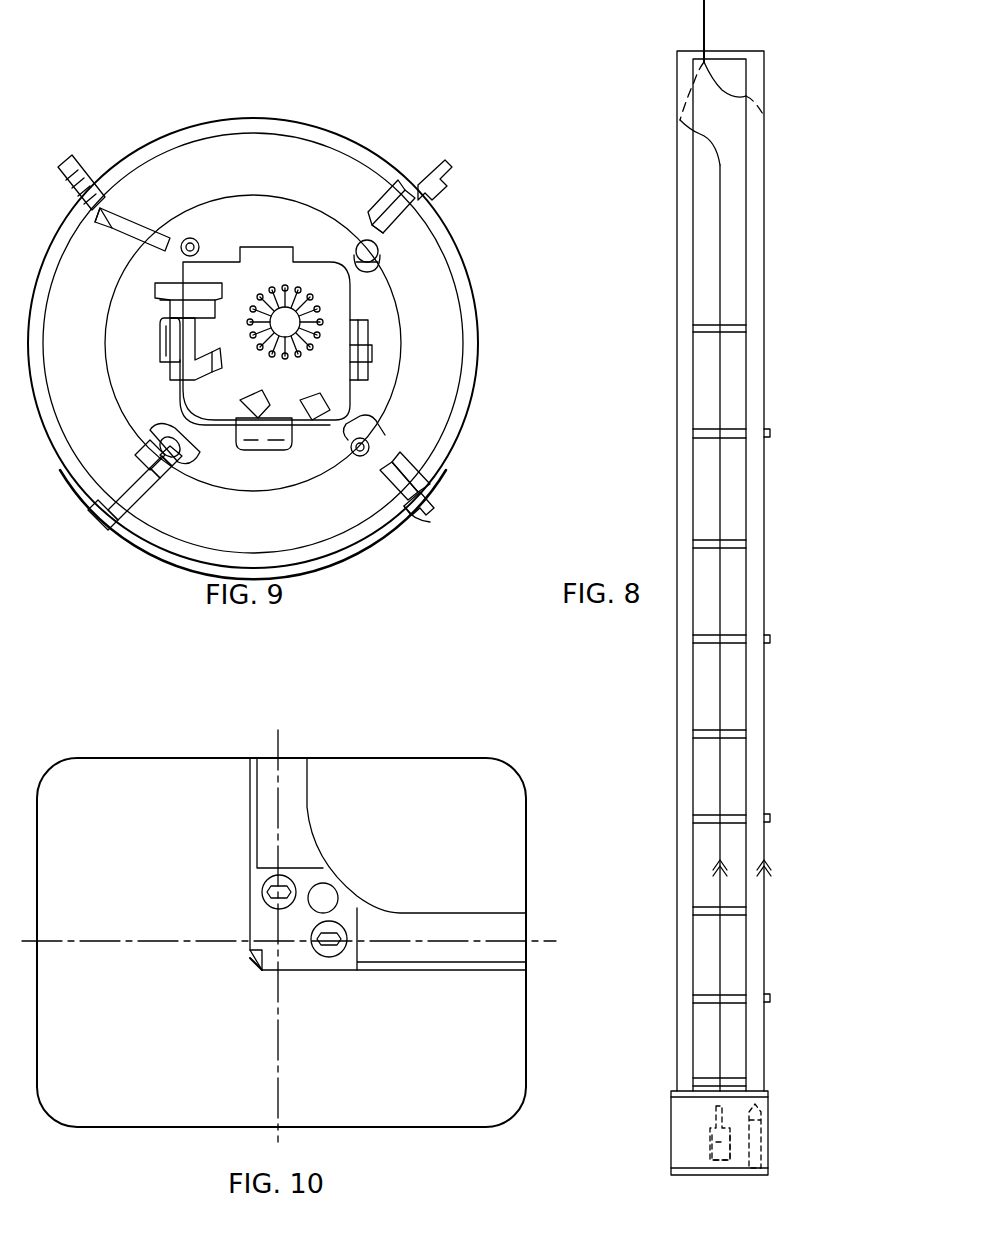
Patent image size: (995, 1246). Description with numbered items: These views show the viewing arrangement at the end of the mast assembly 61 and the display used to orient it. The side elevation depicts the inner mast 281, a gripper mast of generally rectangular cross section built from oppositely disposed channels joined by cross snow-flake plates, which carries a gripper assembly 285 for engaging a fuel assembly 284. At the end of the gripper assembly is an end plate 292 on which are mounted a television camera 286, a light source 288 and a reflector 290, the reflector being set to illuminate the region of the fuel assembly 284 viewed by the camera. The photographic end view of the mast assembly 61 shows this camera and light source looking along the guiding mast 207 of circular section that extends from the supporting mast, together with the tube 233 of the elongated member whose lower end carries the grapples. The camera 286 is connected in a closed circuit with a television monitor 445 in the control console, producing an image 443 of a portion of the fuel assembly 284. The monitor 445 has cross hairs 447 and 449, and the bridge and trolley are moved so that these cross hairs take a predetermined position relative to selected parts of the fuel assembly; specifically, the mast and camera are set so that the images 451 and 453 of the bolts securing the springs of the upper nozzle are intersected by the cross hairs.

In FIG. 9, the mast assembly 61 is at (457, 234).
In FIG. 9, the guiding mast 207 is at (458, 425).
In FIG. 9, the end plate 292 is at (262, 190).
In FIG. 9, the tube 233 is at (290, 318).
In FIG. 9, the gripper assembly 285 is at (195, 338).
In FIG. 9, the television camera 286 is at (181, 247).
In FIG. 8, the television camera 286 is at (752, 1152).
In FIG. 9, the light source 288 is at (349, 452).
In FIG. 8, the light source 288 is at (710, 1127).
In FIG. 8, the inner mast 281 is at (677, 377).
In FIG. 8, the reflector 290 is at (712, 1156).
In FIG. 10, the television monitor 445 is at (576, 995).
In FIG. 10, the cross hair 447 is at (162, 943).
In FIG. 10, the cross hair 449 is at (278, 1008).
In FIG. 10, the fuel assembly 284 is at (464, 1003).
In FIG. 10, the image 443 is at (396, 853).
In FIG. 10, the image of bolt 451 is at (334, 930).
In FIG. 10, the image of bolt 453 is at (268, 892).